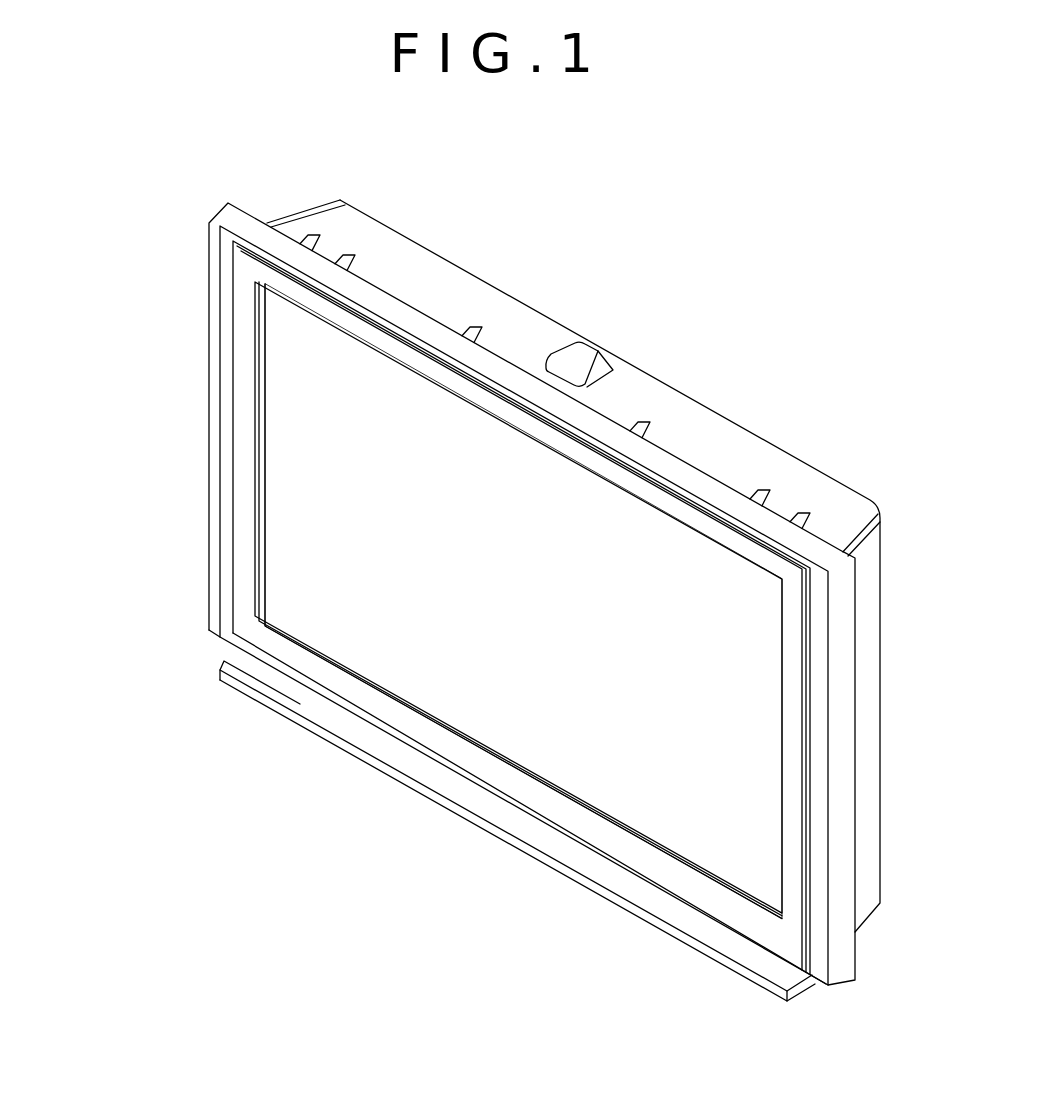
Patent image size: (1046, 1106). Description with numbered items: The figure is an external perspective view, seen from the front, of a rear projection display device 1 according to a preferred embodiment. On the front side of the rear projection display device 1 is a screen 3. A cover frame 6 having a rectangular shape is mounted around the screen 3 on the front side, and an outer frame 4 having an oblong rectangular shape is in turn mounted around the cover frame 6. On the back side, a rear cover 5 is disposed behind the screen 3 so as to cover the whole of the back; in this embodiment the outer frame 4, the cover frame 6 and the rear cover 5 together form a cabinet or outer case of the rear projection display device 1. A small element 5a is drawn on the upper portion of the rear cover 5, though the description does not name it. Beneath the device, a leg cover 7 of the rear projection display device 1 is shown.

The rear projection display device 1 is at (728, 263).
The screen 3 is at (290, 583).
The outer frame 4 is at (213, 255).
The rear cover 5 is at (805, 483).
The button 5a is at (592, 348).
The cover frame 6 is at (243, 397).
The leg cover 7 is at (755, 975).